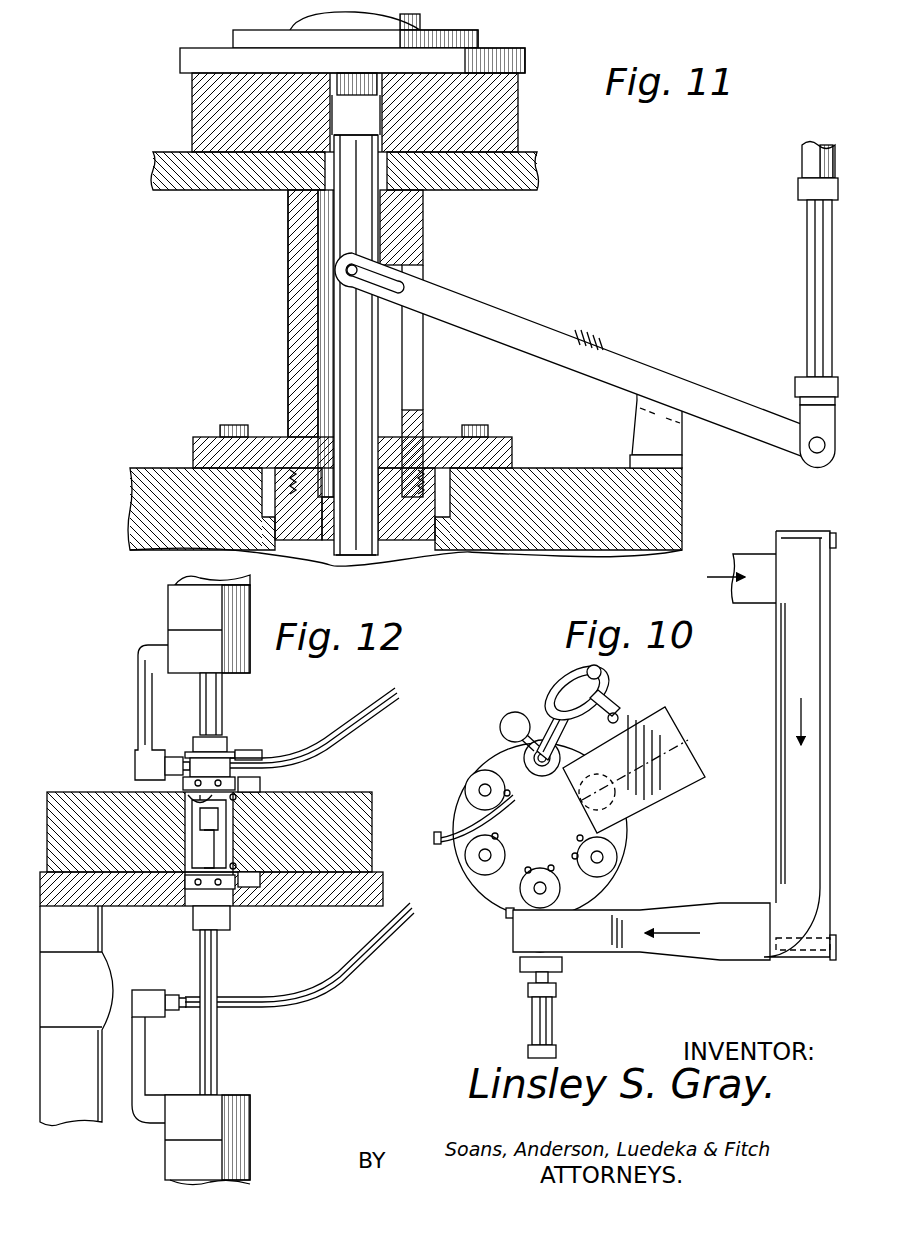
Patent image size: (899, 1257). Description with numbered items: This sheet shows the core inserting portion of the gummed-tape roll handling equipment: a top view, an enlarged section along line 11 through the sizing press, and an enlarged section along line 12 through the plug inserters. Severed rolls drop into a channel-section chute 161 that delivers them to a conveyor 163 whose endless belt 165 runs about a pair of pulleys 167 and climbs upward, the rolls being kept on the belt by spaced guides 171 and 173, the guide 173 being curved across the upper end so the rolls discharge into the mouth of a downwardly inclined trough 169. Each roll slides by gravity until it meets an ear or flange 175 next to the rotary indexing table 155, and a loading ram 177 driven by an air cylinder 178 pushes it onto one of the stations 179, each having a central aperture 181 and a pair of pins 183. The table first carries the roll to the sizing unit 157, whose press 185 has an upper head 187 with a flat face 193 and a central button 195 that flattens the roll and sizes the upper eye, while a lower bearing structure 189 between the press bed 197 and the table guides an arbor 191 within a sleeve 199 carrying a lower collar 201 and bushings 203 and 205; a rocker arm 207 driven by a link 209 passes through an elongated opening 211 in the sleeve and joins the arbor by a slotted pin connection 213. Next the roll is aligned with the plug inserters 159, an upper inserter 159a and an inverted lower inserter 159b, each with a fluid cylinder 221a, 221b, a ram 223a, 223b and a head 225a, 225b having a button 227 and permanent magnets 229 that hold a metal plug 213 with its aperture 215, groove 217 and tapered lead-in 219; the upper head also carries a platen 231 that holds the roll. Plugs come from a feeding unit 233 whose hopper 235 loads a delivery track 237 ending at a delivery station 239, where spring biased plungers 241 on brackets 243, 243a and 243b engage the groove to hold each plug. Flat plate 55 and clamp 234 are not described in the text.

In FIG. 10, the section line 11— 11 is at (690, 722).
In FIG. 10, the section line 12— 12 is at (505, 698).
In FIG. 11, the plate 55 is at (519, 112).
In FIG. 12, the plate 55 is at (360, 802).
In FIG. 11, the rotary indexing table 155 is at (495, 190).
In FIG. 12, the rotary indexing table 155 is at (318, 903).
In FIG. 10, the rotary indexing table 155 is at (630, 845).
In FIG. 10, the sizing unit 157 is at (705, 715).
In FIG. 10, the core plug inserters 159 is at (515, 710).
In FIG. 12, the upper plug inserter 159a is at (134, 662).
In FIG. 12, the lower plug inserter 159b is at (133, 1128).
In FIG. 10, the chute 161 is at (742, 555).
In FIG. 10, the conveyor 163 is at (785, 645).
In FIG. 10, the endless belt 165 is at (783, 768).
In FIG. 10, the pulleys 167 is at (780, 535).
In FIG. 10, the trough 169 is at (692, 953).
In FIG. 10, the guide 171 is at (779, 853).
In FIG. 10, the curved guide 173 is at (800, 915).
In FIG. 10, the ear or flange 175 is at (516, 936).
In FIG. 10, the loading ram 177 is at (520, 965).
In FIG. 10, the air cylinder 178 is at (550, 1020).
In FIG. 10, the stations 179 is at (590, 853).
In FIG. 11, the central aperture 181 is at (423, 192).
In FIG. 12, the central aperture 181 is at (242, 904).
In FIG. 10, the central aperture 181 is at (604, 858).
In FIG. 10, the pins 183 is at (486, 812).
In FIG. 10, the press 185 is at (655, 790).
In FIG. 11, the upper head 187 is at (503, 50).
In FIG. 11, the lower bearing structure 189 is at (286, 376).
In FIG. 11, the arbor 191 is at (330, 317).
In FIG. 11, the flat face 193 is at (518, 76).
In FIG. 11, the button 195 is at (346, 94).
In FIG. 11, the press bed 197 is at (556, 478).
In FIG. 11, the sleeve 199 is at (292, 340).
In FIG. 11, the lower collar 201 is at (300, 540).
In FIG. 11, the upper bushing 203 is at (300, 218).
In FIG. 11, the lower bushing 205 is at (387, 540).
In FIG. 11, the rocker arm 207 is at (520, 330).
In FIG. 11, the link 209 is at (807, 292).
In FIG. 11, the elongated opening 211 is at (418, 380).
In FIG. 11, the slotted pin connection / core plug 213 is at (346, 273).
In FIG. 12, the slotted pin connection / core plug 213 is at (236, 800).
In FIG. 12, the central aperture 215 is at (220, 848).
In FIG. 12, the circumferential groove 217 is at (262, 784).
In FIG. 12, the tapered lead-in 219 is at (190, 805).
In FIG. 12, the upper fluid cylinder 221a is at (168, 605).
In FIG. 12, the lower fluid cylinder 221b is at (175, 1165).
In FIG. 12, the upper ram 223a is at (212, 690).
In FIG. 12, the lower ram 223b is at (217, 1054).
In FIG. 12, the upper head 225a is at (224, 747).
In FIG. 12, the lower head 225b is at (228, 922).
In FIG. 12, the button 227 is at (219, 819).
In FIG. 12, the permanent magnets 229 is at (124, 928).
In FIG. 12, the platen 231 is at (262, 776).
In FIG. 10, the core plug feeding unit 233 is at (578, 672).
In FIG. 10, the clamp 234 is at (617, 712).
In FIG. 10, the automatic hopper 235 is at (602, 670).
In FIG. 12, the delivery track 237 is at (360, 704).
In FIG. 10, the delivery track 237 is at (548, 708).
In FIG. 12, the delivery station 239 is at (252, 757).
In FIG. 10, the delivery station 239 is at (524, 755).
In FIG. 12, the spring biased plungers 241 is at (174, 757).
In FIG. 10, the brackets / sorting blades 243 is at (442, 832).
In FIG. 12, the upper bracket 243a is at (145, 710).
In FIG. 12, the lower bracket 243b is at (146, 1050).